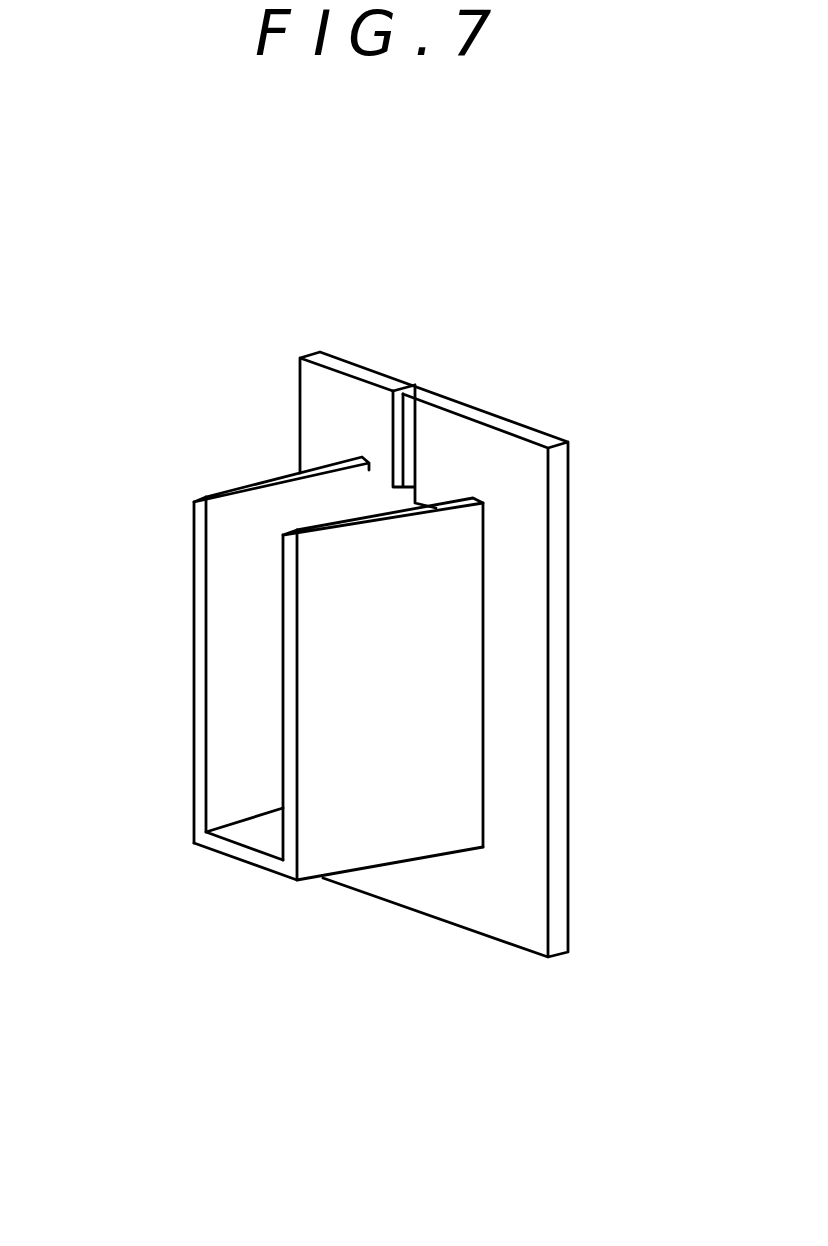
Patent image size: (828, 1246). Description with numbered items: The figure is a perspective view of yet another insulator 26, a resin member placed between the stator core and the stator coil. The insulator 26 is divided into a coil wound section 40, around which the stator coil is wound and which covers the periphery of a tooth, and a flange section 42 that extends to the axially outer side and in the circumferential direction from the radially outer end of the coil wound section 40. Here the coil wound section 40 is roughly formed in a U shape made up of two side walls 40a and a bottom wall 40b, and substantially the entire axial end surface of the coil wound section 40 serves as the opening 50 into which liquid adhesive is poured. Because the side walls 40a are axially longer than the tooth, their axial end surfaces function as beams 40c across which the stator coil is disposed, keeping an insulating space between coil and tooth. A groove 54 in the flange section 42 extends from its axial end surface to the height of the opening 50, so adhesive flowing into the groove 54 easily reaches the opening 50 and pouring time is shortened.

The insulator 26 is at (128, 361).
The coil wound section 40 is at (372, 681).
The side walls 40a is at (372, 577).
The bottom wall 40b is at (279, 909).
The beams 40c is at (357, 437).
The flange section 42 is at (499, 610).
The opening 50 is at (315, 553).
The groove 54 is at (440, 385).